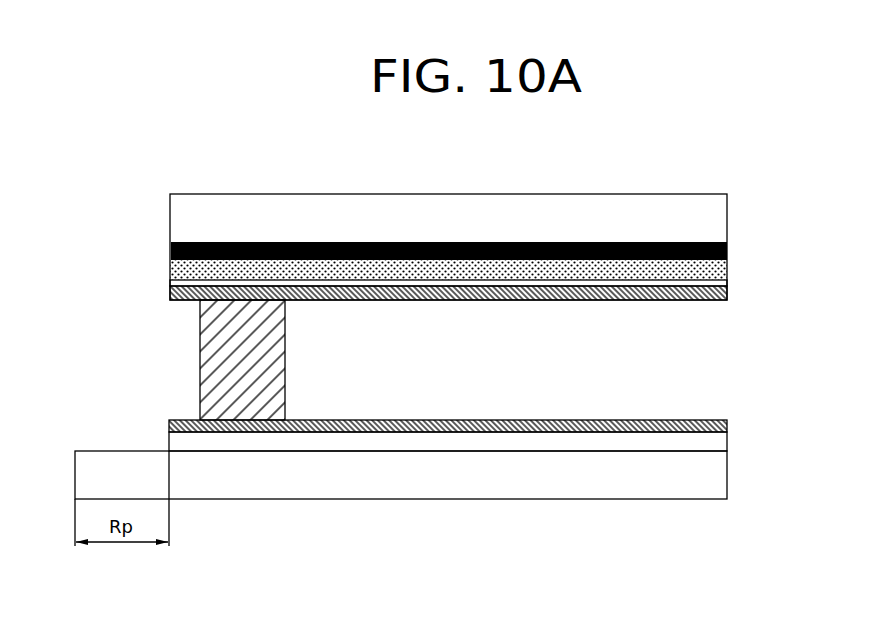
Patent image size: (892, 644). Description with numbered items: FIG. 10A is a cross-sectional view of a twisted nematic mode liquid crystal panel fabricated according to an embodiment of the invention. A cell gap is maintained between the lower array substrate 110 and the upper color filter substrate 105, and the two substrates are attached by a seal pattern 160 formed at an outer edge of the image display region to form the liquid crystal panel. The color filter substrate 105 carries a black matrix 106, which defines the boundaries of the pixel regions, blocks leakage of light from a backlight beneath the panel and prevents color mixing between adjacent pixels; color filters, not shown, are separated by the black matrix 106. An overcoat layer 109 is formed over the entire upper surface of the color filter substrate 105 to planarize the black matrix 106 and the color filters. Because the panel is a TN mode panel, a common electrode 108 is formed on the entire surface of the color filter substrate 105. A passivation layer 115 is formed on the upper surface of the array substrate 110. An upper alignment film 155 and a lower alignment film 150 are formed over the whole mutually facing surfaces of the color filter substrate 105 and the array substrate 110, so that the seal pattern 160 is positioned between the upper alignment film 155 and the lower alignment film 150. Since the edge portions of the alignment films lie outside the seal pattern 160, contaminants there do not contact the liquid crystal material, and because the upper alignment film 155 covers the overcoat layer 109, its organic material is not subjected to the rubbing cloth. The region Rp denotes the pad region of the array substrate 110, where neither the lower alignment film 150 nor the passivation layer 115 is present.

The color filter substrate 105 is at (720, 219).
The black matrix 106 is at (727, 251).
The overcoat layer 109 is at (727, 274).
The common electrode 108 is at (727, 286).
The upper alignment film 155 is at (697, 302).
The seal pattern 160 is at (210, 364).
The lower alignment film 150 is at (727, 424).
The passivation layer 115 is at (720, 444).
The array substrate 110 is at (720, 473).